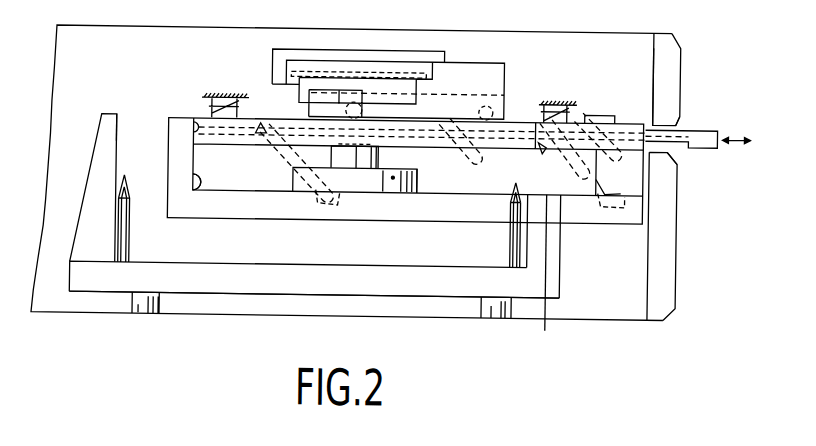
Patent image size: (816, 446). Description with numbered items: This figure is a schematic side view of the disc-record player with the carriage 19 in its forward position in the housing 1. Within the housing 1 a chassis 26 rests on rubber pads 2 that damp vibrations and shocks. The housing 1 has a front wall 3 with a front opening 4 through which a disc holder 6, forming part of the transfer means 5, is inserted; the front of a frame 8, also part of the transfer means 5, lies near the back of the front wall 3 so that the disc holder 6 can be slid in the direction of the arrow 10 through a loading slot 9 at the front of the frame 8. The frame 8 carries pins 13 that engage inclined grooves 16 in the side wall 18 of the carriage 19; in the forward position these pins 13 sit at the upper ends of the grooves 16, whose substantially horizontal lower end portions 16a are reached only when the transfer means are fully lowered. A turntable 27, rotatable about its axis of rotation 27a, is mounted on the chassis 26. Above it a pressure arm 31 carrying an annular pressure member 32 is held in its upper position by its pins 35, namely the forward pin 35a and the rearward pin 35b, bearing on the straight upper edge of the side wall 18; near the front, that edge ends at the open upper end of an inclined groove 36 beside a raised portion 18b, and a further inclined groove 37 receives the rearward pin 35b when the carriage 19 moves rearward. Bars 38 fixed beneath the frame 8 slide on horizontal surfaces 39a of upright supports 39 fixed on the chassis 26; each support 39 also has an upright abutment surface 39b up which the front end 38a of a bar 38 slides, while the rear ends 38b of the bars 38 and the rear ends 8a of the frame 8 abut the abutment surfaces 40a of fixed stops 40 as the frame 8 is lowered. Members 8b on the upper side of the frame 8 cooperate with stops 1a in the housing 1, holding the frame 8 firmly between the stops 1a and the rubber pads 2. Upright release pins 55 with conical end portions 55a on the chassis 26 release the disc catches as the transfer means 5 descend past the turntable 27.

The housing 1 is at (273, 313).
The stops 1a is at (240, 106).
The rubber pads 2 is at (143, 317).
The front wall 3 is at (669, 45).
The front opening 4 is at (678, 118).
The transfer means 5 is at (631, 105).
The disc holder 6 is at (695, 122).
The frame 8 is at (674, 143).
The rear ends of side members 8a is at (201, 95).
The members with inclined surfaces 8b is at (226, 103).
The loading slot 9 is at (656, 115).
The arrow 10 is at (731, 128).
The pins 13 is at (263, 124).
The inclined grooves 16 is at (277, 161).
The lower end portions of grooves 16a is at (335, 199).
The side wall 18 is at (182, 123).
The raised portion 18b is at (595, 100).
The carriage 19 is at (248, 226).
The chassis 26 is at (370, 280).
The turntable 27 is at (405, 162).
The axis of rotation 27a is at (369, 178).
The pressure arm 31 is at (445, 95).
The pressure member 32 is at (300, 48).
The guide block 35 is at (321, 102).
The forward pin 35a is at (489, 95).
The rearward pin 35b is at (363, 103).
The inclined grooves 36 is at (637, 159).
The further inclined grooves 37 is at (472, 161).
The bars 38 is at (419, 184).
The front ends of bars 38a is at (600, 172).
The rear ends of bars 38b is at (202, 188).
The upright supports 39 is at (553, 243).
The horizontal surfaces 39a is at (549, 275).
The upright abutment surface 39b is at (504, 313).
The fixed stops 40 is at (96, 150).
The abutment surfaces 40a is at (119, 126).
The upright pins 55 is at (132, 235).
The conical end portions 55a is at (128, 174).